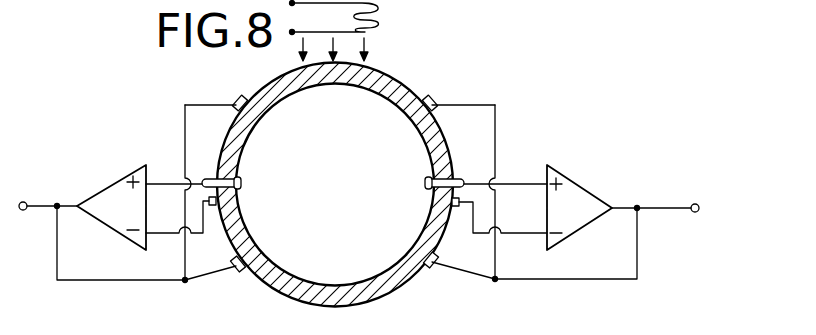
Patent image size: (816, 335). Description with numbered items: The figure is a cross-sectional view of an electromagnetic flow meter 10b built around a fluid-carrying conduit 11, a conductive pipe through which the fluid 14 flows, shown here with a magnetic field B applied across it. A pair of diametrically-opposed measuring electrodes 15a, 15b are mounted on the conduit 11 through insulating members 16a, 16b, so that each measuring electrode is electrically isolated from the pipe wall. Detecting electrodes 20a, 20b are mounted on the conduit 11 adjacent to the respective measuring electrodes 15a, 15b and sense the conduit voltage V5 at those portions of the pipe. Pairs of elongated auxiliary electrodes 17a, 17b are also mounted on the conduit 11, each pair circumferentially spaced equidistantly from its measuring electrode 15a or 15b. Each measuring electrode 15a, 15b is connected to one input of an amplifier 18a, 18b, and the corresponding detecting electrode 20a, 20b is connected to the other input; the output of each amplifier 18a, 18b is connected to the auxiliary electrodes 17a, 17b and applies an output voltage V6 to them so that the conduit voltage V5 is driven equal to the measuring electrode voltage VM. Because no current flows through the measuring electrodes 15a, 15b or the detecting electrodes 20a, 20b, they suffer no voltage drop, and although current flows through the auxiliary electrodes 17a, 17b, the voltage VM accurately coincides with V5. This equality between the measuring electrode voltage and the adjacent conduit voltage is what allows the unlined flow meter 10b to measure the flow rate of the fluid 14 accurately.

The electromagnetic flow meter 10b is at (510, 109).
The fluid-carrying conduit 11 is at (392, 82).
The fluid 14 is at (344, 248).
The measuring electrode 15a is at (426, 181).
The measuring electrode 15b is at (240, 181).
The insulating member 16a is at (430, 195).
The insulating member 16b is at (241, 193).
The auxiliary electrodes 17a is at (446, 88).
The auxiliary electrodes 17b is at (239, 98).
The amplifier 18a is at (578, 186).
The amplifier 18b is at (98, 191).
The detecting electrode 20a is at (455, 207).
The detecting electrode 20b is at (212, 207).
The magnetic field B is at (333, 48).
The measuring electrode voltage VM is at (474, 183).
The conduit voltage V5 is at (521, 234).
The amplifier output voltage V6 is at (668, 206).